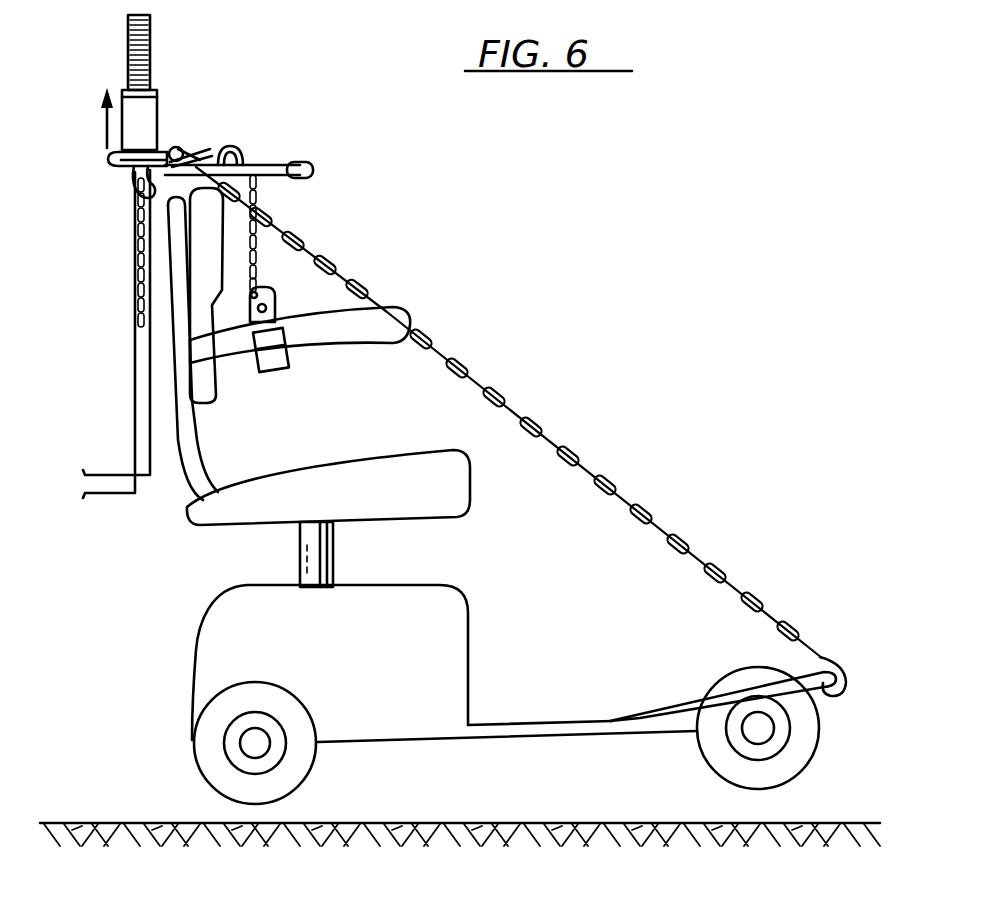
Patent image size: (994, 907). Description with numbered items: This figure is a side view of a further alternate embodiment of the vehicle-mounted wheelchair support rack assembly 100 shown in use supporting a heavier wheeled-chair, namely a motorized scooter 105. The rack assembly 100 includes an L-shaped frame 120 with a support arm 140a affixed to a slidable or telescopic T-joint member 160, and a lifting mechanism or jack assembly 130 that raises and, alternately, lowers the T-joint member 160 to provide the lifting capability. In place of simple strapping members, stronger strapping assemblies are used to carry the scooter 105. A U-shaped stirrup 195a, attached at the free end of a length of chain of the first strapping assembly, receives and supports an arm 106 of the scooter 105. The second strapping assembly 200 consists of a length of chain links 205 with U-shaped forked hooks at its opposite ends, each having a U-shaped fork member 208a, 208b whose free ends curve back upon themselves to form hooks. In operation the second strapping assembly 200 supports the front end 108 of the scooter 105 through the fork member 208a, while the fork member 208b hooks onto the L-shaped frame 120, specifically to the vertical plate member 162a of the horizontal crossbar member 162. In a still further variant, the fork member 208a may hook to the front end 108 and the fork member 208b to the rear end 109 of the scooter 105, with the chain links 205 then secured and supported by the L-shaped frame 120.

The vehicle-mounted wheelchair support rack assembly 100 is at (246, 67).
The motorized scooter 105 is at (403, 712).
The arms of the motorized scooter 106 is at (385, 335).
The front end of the motorized scooter 108 is at (665, 705).
The rear end of the motorized scooter 109 is at (215, 648).
The L-shaped frame 120 is at (135, 395).
The lifting mechanism or jack assembly 130 is at (152, 55).
The support arm 140a is at (268, 165).
The T-joint member 160 is at (148, 130).
The horizontal crossbar member 162 is at (140, 205).
The vertical plate member 162a is at (135, 175).
The U-shaped stirrup 195a is at (262, 275).
The second strapping assembly 200 is at (509, 412).
The length of chain links 205 is at (523, 412).
The U-shaped fork member 208a is at (808, 660).
The U-shaped fork member 208b is at (112, 153).